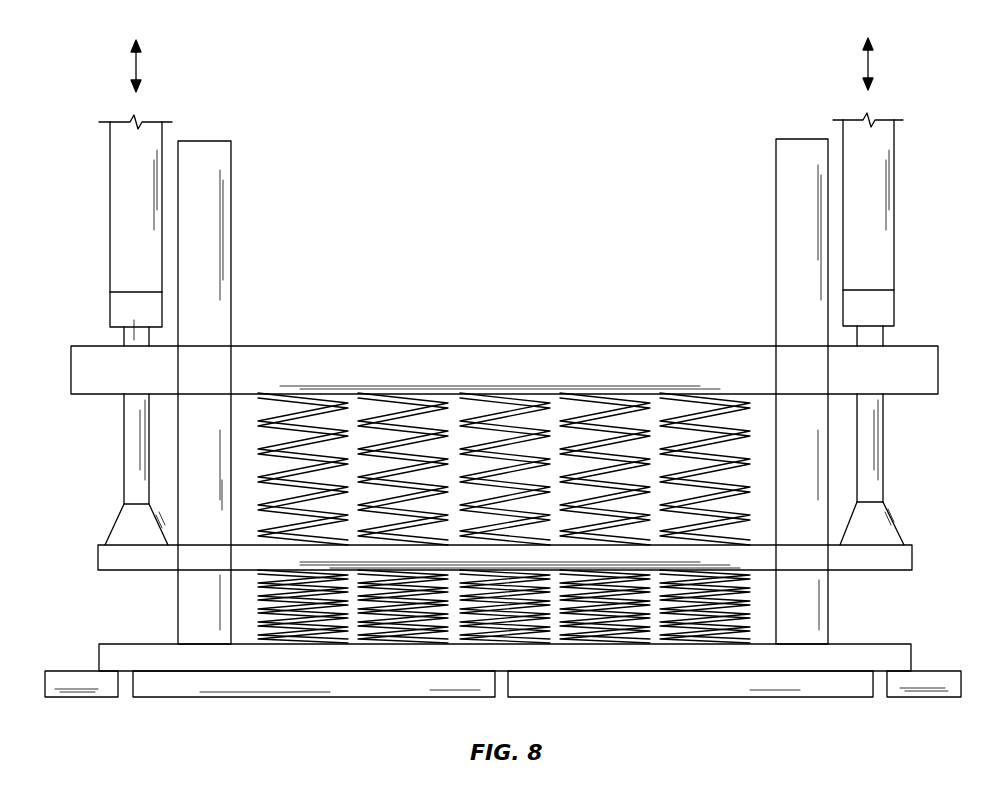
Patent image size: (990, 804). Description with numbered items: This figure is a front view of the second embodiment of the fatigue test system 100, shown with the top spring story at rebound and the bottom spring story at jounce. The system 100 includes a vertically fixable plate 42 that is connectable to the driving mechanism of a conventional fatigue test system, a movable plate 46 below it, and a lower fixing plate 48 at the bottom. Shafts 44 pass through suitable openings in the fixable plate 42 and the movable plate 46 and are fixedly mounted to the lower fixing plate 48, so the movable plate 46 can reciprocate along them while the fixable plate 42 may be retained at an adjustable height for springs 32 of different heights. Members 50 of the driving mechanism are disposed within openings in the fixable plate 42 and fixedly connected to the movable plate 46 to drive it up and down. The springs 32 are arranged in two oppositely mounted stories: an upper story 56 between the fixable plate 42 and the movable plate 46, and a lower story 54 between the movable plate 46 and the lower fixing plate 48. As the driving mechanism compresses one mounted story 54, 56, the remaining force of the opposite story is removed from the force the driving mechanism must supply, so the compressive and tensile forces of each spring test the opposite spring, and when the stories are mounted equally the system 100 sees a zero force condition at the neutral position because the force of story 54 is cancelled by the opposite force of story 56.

The fatigue test system 100 is at (712, 61).
The springs 32 is at (258, 507).
The vertically fixable plate 42 is at (493, 349).
The shafts 44 is at (218, 300).
The movable plate 46 is at (900, 557).
The lower fixing plate 48 is at (443, 692).
The members 50 is at (118, 250).
The story 54 is at (906, 612).
The story 56 is at (906, 464).